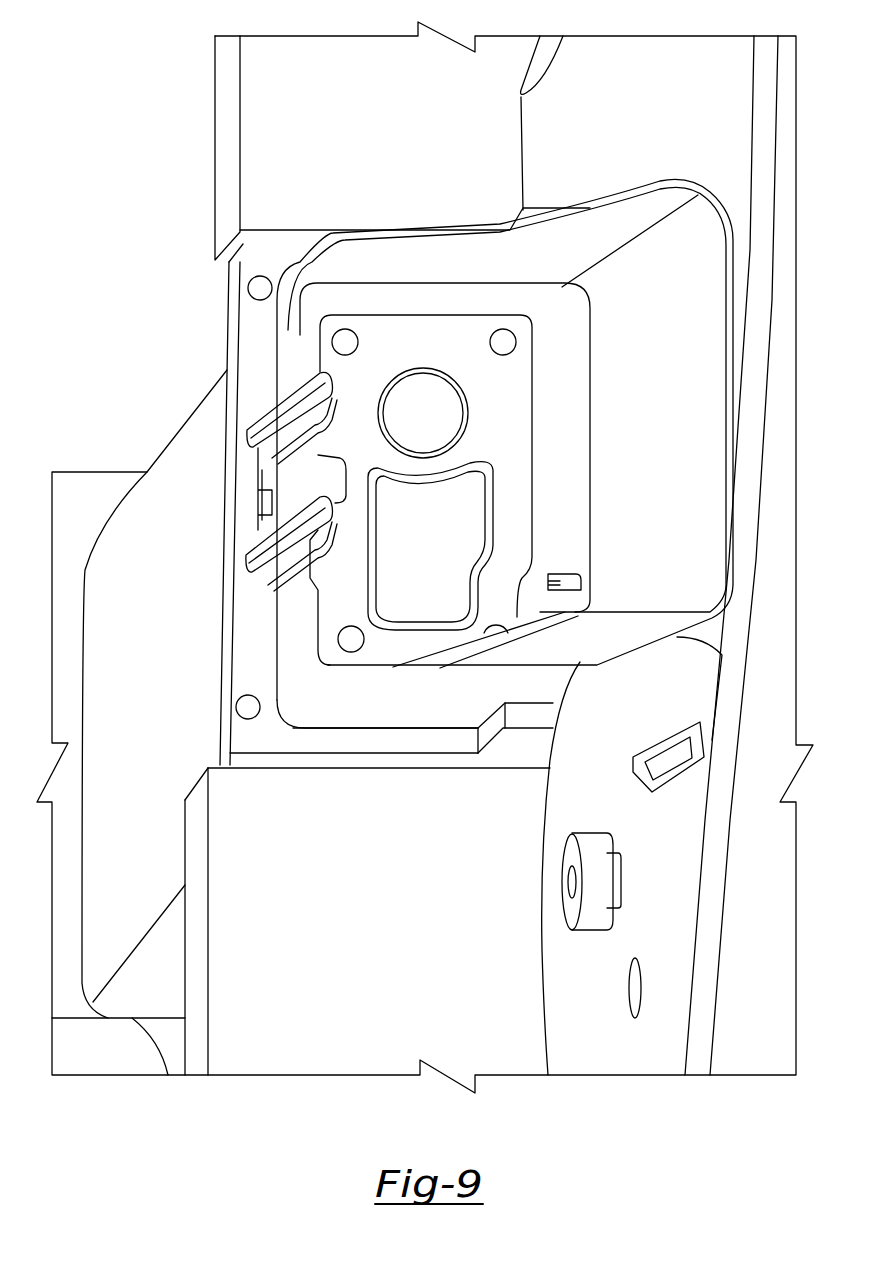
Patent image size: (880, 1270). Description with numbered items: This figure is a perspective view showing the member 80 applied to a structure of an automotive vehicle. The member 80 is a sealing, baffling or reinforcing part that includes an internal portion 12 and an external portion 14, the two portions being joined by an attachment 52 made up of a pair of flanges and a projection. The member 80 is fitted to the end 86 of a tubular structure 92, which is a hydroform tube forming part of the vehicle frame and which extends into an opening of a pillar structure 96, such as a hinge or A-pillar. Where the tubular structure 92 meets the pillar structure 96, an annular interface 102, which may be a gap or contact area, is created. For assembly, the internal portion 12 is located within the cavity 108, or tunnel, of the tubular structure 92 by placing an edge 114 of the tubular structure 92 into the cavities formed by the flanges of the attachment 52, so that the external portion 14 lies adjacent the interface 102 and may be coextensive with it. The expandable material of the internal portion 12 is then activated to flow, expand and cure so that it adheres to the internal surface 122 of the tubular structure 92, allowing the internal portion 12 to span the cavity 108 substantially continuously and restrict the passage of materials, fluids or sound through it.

The internal portion 12 is at (441, 544).
The external portion 14 is at (420, 743).
The first attachment 52 is at (352, 380).
The member 80 is at (200, 300).
The end 86 is at (386, 250).
The tubular structure 92 is at (180, 457).
The pillar structure 96 is at (382, 920).
The annular interface 102 is at (278, 797).
The cavity 108 is at (308, 204).
The edge 114 is at (307, 610).
The internal surface 122 is at (481, 248).